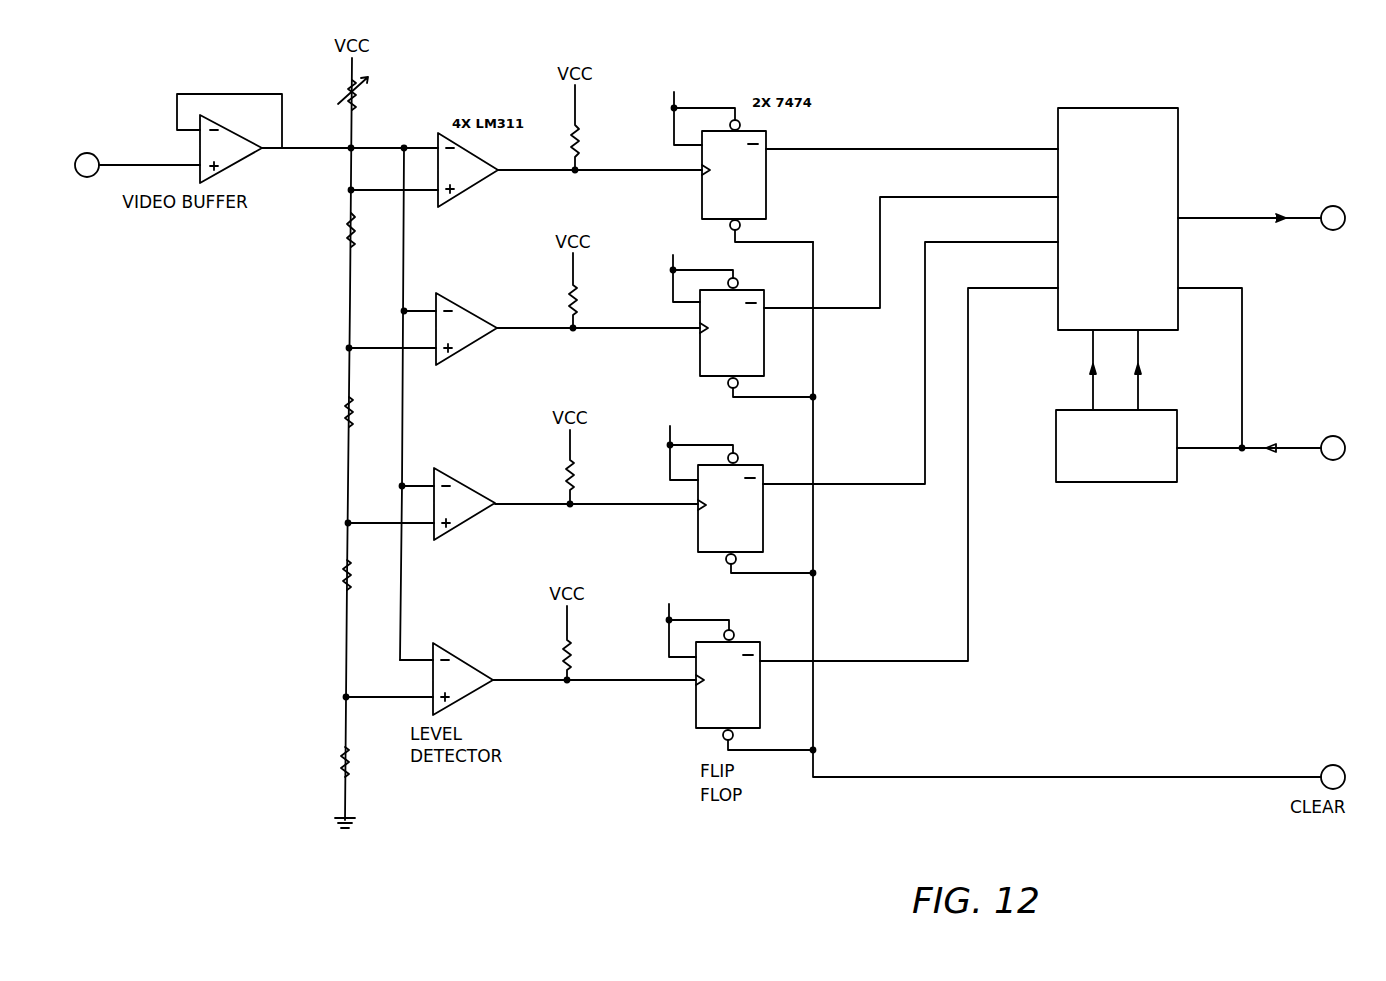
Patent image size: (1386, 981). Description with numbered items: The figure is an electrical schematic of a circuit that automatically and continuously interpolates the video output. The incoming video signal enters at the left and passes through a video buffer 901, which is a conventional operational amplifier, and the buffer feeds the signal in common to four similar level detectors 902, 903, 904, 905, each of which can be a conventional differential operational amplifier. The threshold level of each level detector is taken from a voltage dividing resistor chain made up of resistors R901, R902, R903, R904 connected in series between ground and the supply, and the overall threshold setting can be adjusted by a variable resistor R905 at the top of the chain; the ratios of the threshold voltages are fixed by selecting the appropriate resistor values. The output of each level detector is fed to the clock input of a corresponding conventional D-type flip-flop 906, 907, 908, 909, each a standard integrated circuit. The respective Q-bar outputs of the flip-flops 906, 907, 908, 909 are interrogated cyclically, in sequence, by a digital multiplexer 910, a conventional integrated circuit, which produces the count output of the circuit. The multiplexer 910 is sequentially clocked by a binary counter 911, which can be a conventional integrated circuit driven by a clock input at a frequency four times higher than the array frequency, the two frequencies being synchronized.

The video buffer 901 is at (238, 163).
The level detector 902 is at (482, 693).
The level detector 903 is at (476, 518).
The level detector 904 is at (478, 343).
The level detector 905 is at (480, 186).
The D-type flip-flop 906 is at (760, 705).
The D-type flip-flop 907 is at (782, 546).
The D-type flip-flop 908 is at (764, 362).
The D-type flip-flop 909 is at (766, 195).
The digital multiplexer 910 is at (1178, 157).
The binary counter 911 is at (1152, 482).
The resistor R901 is at (345, 771).
The resistor R902 is at (347, 585).
The resistor R903 is at (349, 412).
The resistor R904 is at (340, 236).
The variable resistor R905 is at (352, 92).